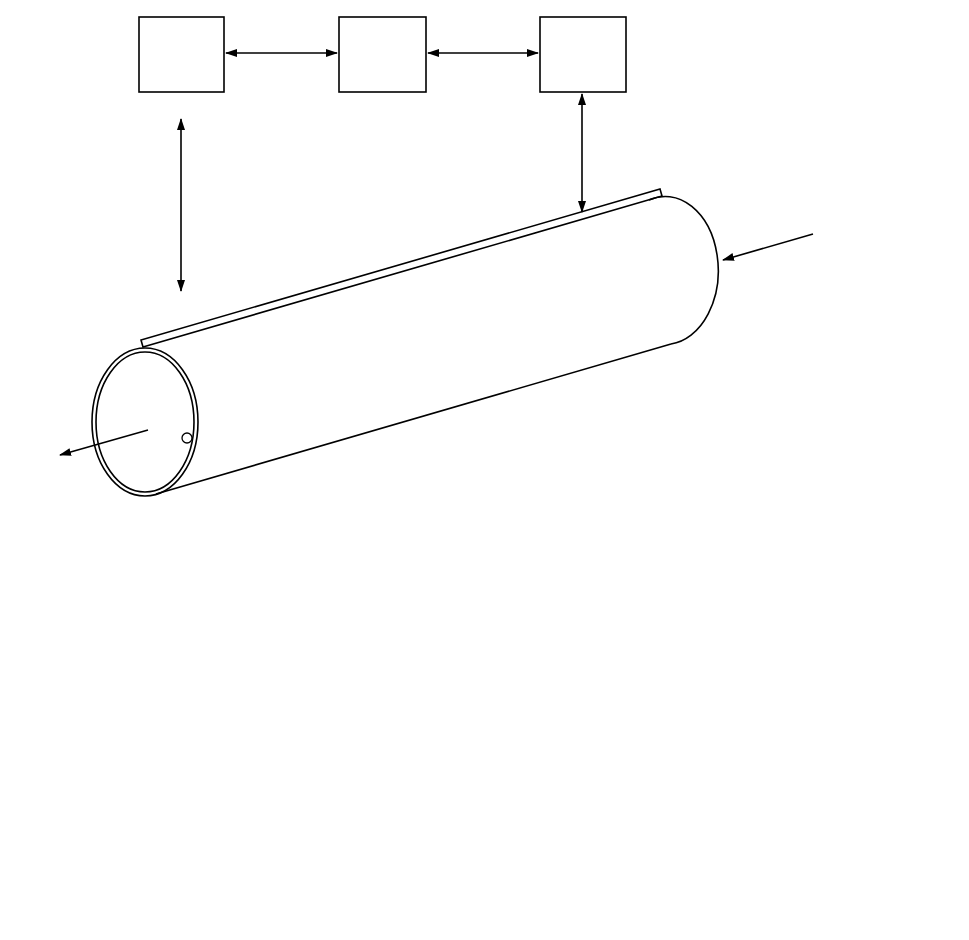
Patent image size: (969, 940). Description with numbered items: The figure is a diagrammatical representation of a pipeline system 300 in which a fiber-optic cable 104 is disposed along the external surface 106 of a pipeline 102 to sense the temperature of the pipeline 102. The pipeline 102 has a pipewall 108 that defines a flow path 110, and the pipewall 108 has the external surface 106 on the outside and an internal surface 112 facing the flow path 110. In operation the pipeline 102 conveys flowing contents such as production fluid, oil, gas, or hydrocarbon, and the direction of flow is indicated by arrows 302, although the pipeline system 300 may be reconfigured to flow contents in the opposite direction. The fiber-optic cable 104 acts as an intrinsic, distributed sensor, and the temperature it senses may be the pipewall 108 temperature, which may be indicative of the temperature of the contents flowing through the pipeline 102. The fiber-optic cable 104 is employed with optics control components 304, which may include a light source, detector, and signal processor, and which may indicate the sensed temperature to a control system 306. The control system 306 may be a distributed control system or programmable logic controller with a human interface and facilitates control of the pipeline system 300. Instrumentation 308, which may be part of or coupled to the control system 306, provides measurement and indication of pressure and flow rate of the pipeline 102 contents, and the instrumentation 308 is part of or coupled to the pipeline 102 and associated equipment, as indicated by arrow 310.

The pipeline system 300 is at (438, 733).
The pipeline 102 is at (437, 345).
The fiber-optic cable 104 is at (337, 284).
The external surface 106 is at (545, 325).
The pipewall 108 is at (168, 456).
The flow path 110 is at (166, 410).
The internal surface 112 is at (192, 445).
The arrows 302 is at (772, 248).
The optics control components 304 is at (602, 68).
The control system 306 is at (402, 68).
The instrumentation 308 is at (202, 68).
The arrow 310 is at (181, 203).